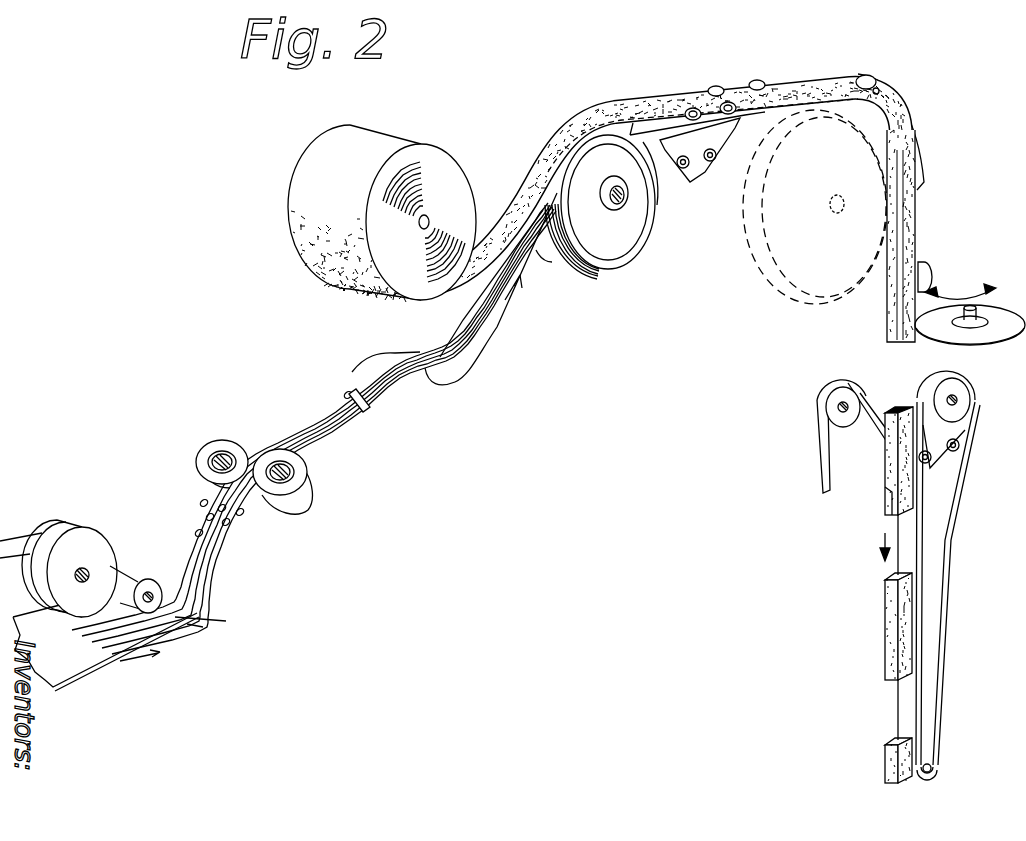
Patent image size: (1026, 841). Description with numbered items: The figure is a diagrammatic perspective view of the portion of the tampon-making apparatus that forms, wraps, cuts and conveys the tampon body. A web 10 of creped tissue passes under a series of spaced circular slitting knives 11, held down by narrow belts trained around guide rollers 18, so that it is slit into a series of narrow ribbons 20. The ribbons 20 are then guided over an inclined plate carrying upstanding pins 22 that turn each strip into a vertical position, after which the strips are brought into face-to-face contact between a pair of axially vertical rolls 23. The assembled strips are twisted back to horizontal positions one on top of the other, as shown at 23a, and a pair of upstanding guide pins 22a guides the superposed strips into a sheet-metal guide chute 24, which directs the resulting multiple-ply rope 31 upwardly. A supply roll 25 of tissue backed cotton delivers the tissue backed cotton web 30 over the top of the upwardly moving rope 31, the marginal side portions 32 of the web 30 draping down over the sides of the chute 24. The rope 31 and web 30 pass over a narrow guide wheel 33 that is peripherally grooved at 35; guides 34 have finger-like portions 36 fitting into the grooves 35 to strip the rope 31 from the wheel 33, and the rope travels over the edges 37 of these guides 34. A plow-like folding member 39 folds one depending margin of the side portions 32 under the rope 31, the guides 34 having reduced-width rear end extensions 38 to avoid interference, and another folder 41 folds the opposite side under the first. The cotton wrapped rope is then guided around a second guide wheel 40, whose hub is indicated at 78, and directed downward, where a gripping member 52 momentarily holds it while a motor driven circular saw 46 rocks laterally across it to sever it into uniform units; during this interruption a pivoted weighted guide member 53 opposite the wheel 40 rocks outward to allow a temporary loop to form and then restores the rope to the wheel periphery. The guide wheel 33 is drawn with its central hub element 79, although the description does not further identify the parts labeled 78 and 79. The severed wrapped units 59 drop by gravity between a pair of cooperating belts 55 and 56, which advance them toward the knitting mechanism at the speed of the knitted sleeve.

The web 10 is at (100, 663).
The circular slitting knives 11 is at (92, 531).
The guide rollers 18 is at (127, 576).
The ribbons 20 is at (204, 624).
The upstanding pins 22 is at (206, 514).
The upstanding guide pins 22a is at (345, 391).
The axially vertical rolls 23 is at (222, 441).
The twisted-back strips 23a is at (384, 388).
The guide chute 24 is at (483, 340).
The supply roll 25 is at (428, 150).
The tissue backed cotton web 30 is at (479, 257).
The rope 31 is at (462, 326).
The marginal side portions 32 is at (537, 252).
The guide wheel 33 is at (600, 214).
The guides 34 is at (645, 148).
The grooves 35 is at (558, 232).
The finger-like portions 36 is at (606, 130).
The edges 37 is at (639, 136).
The rear end extensions 38 is at (694, 121).
The plow-like folding member 39 is at (728, 115).
The guide wheel 40 is at (745, 229).
The folder 41 is at (758, 124).
The motor driven circular saw 46 is at (1003, 311).
The gripping member 52 is at (930, 264).
The weighted guide member 53 is at (912, 134).
The belt 55 is at (873, 401).
The belt 56 is at (920, 512).
The wrapped unit 59 is at (885, 631).
The hub 78 is at (842, 195).
The hub nut 79 is at (627, 190).